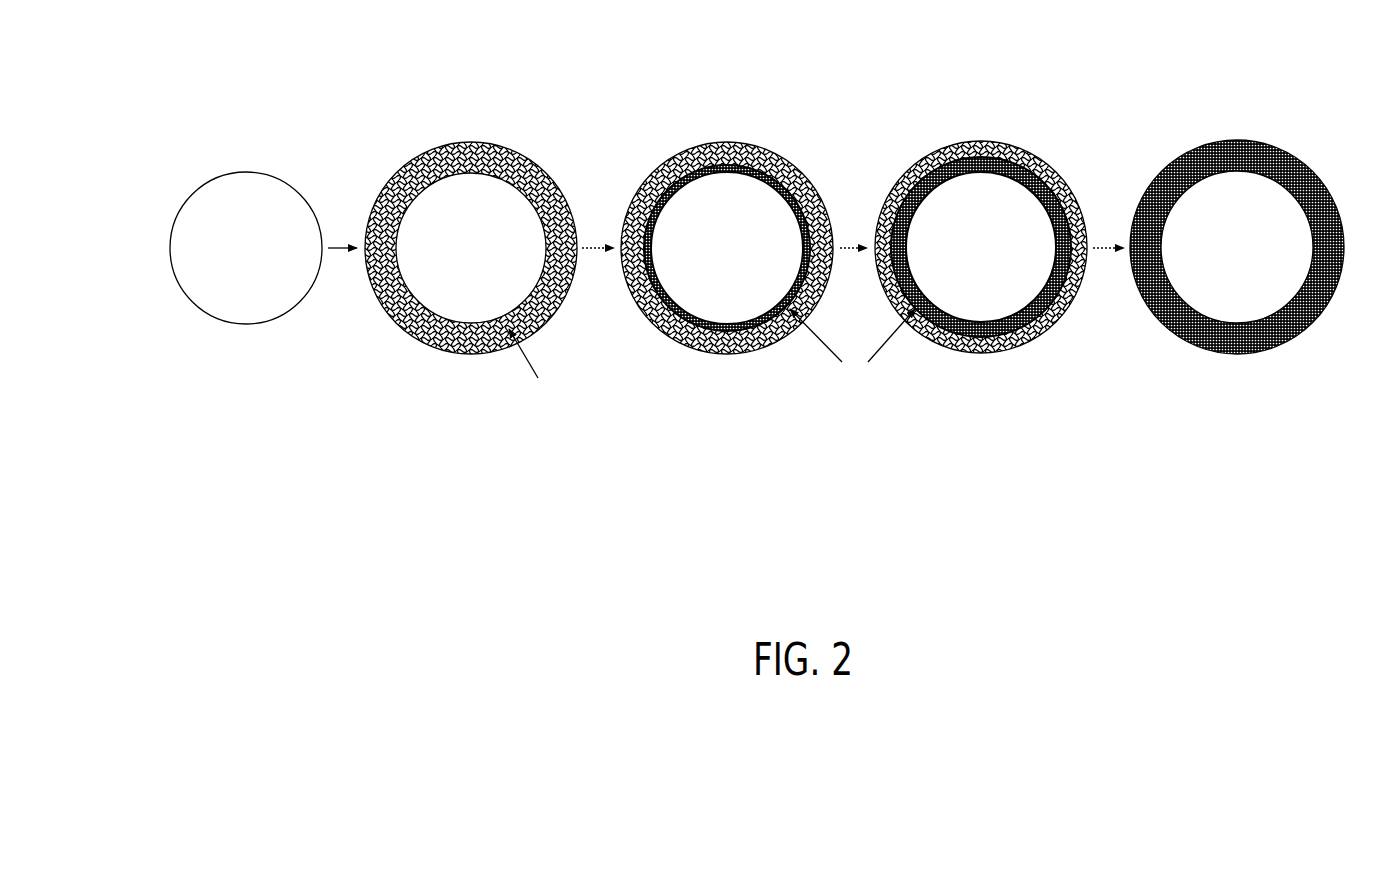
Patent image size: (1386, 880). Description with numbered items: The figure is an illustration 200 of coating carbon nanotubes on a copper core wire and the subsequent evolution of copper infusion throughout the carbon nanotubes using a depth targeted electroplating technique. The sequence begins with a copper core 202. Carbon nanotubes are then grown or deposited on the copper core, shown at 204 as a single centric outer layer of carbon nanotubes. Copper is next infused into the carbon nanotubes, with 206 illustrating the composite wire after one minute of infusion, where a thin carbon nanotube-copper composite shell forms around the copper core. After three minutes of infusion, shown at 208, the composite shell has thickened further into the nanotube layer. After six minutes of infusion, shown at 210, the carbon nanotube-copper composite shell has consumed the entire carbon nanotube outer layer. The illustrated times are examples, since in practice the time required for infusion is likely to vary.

The illustration 200 is at (494, 119).
The copper core 202 is at (187, 193).
The carbon nanotubes on the copper core 204 is at (402, 170).
The composite wire after one minute of infusion 206 is at (655, 173).
The composite wire after three minutes of infusion 208 is at (918, 160).
The composite wire after six minutes of infusion 210 is at (1167, 170).